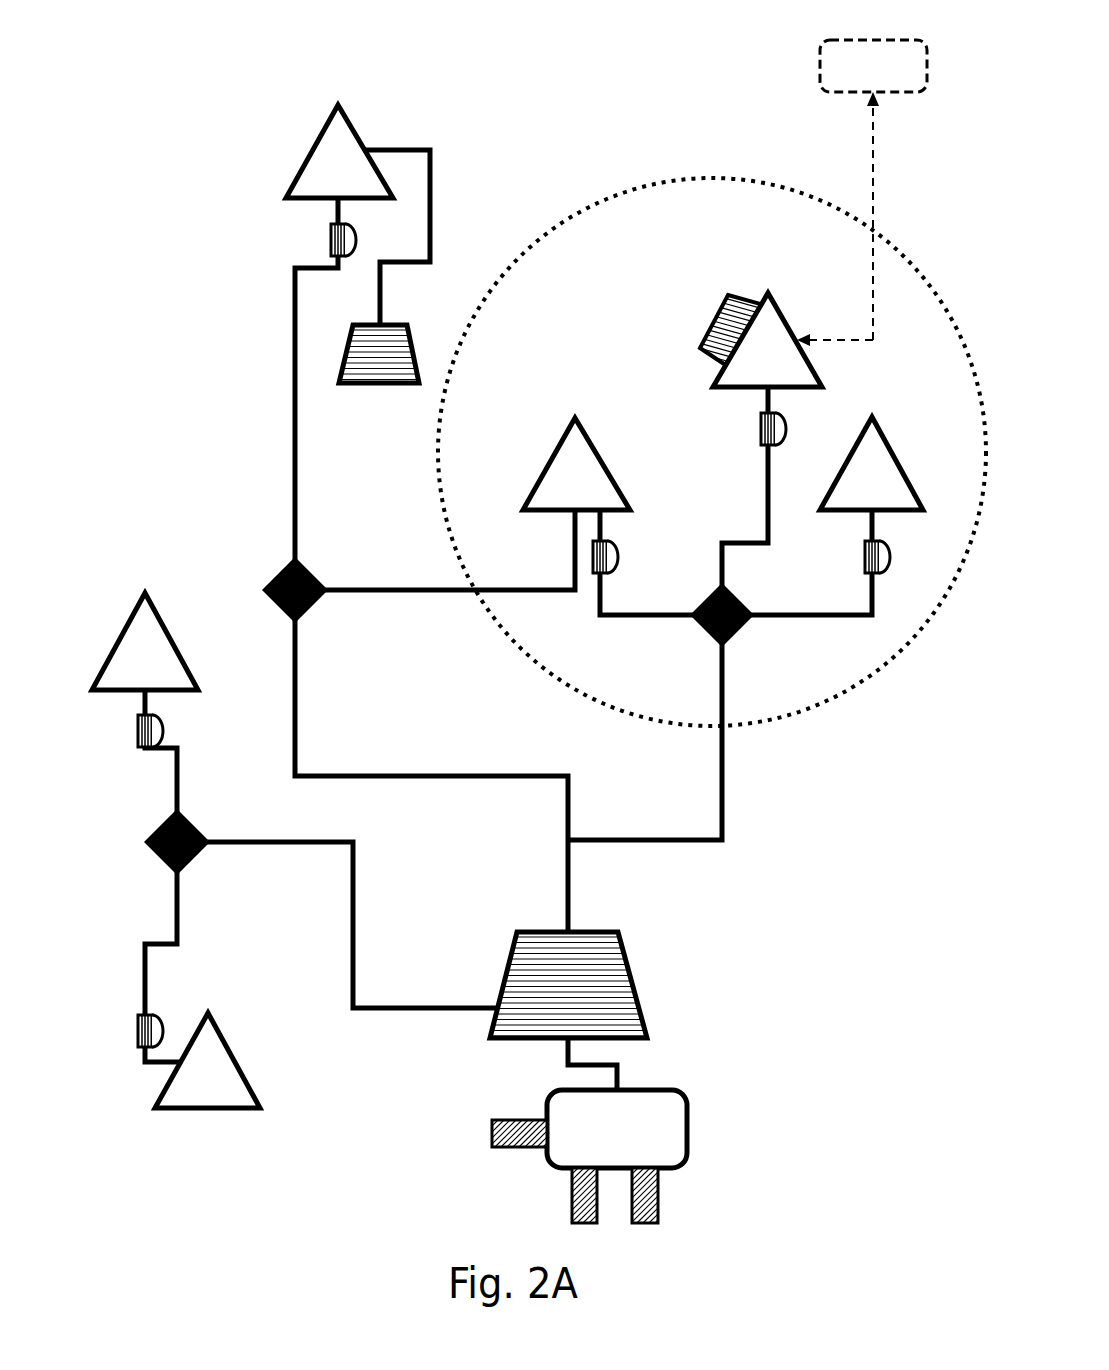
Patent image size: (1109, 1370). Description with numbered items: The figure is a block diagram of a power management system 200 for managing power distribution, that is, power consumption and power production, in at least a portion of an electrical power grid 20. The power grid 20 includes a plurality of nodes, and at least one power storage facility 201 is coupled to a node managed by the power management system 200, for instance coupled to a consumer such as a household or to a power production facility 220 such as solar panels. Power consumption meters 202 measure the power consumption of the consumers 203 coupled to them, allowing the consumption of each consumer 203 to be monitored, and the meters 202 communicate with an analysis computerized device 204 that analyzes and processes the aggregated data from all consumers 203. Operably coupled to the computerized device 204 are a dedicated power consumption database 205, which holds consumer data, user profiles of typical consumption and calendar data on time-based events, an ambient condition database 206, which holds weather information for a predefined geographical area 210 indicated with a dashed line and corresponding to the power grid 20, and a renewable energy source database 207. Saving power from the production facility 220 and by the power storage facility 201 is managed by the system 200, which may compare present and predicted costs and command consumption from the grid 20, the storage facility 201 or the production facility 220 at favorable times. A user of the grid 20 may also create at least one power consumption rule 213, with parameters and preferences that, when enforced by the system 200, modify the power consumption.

The power management system 200 is at (131, 76).
The electrical power grid 20 is at (293, 428).
The power storage facility 201 is at (394, 385).
The power consumption meter 202 is at (330, 240).
The consumer 203 is at (349, 122).
The analysis computerized device 204 is at (688, 1135).
The power consumption database 205 is at (661, 1193).
The ambient condition database 206 is at (569, 1185).
The renewable energy source database 207 is at (521, 1120).
The predefined geographical area 210 is at (900, 665).
The power consumption rule 213 is at (862, 193).
The power production facility 220 is at (719, 312).